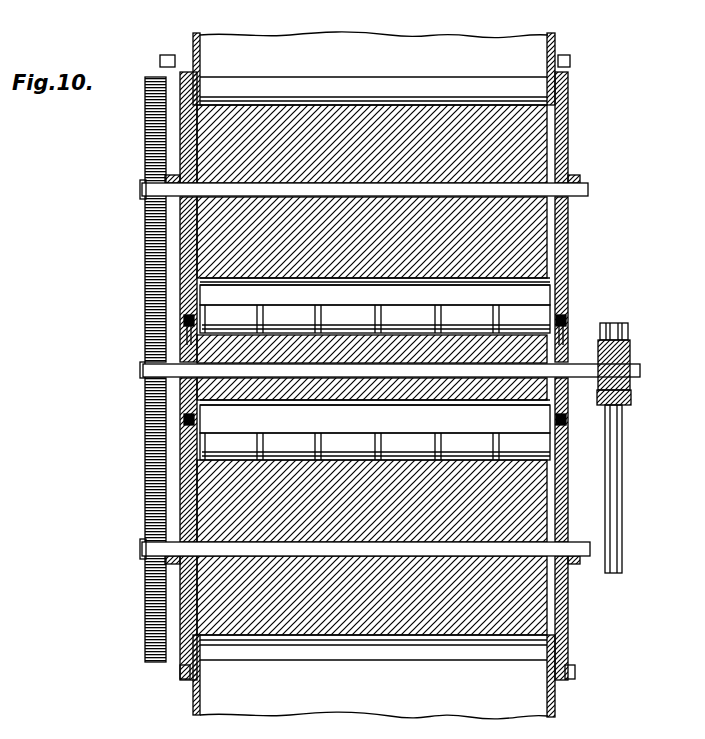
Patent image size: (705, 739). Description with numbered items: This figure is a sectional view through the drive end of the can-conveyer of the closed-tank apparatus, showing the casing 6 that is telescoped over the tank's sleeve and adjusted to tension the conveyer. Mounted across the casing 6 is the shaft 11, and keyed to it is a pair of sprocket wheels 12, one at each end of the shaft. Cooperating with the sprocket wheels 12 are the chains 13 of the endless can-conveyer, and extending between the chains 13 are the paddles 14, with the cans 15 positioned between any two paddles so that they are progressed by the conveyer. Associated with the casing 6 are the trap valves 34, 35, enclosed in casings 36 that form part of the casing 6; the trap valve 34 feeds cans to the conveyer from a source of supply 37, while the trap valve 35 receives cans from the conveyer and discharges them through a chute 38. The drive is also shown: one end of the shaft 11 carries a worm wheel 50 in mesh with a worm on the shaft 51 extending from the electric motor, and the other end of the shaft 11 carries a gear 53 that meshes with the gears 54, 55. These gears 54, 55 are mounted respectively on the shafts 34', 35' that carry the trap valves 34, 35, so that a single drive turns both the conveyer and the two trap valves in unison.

The casing 6 is at (567, 286).
The shaft 11 is at (640, 372).
The sprocket wheels 12 is at (196, 335).
The chains 13 is at (195, 420).
The paddles 14 is at (375, 356).
The cans 15 is at (375, 382).
The trap valve 34 is at (410, 191).
The shaft 34' is at (388, 188).
The trap valve 35 is at (407, 547).
The shaft 35' is at (379, 568).
The casings 36 is at (570, 238).
The source of supply 37 is at (445, 45).
The chute 38 is at (445, 716).
The worm wheel 50 is at (630, 334).
The shaft 51 is at (622, 466).
The gear 53 is at (146, 360).
The gear 54 is at (146, 163).
The gear 55 is at (146, 516).